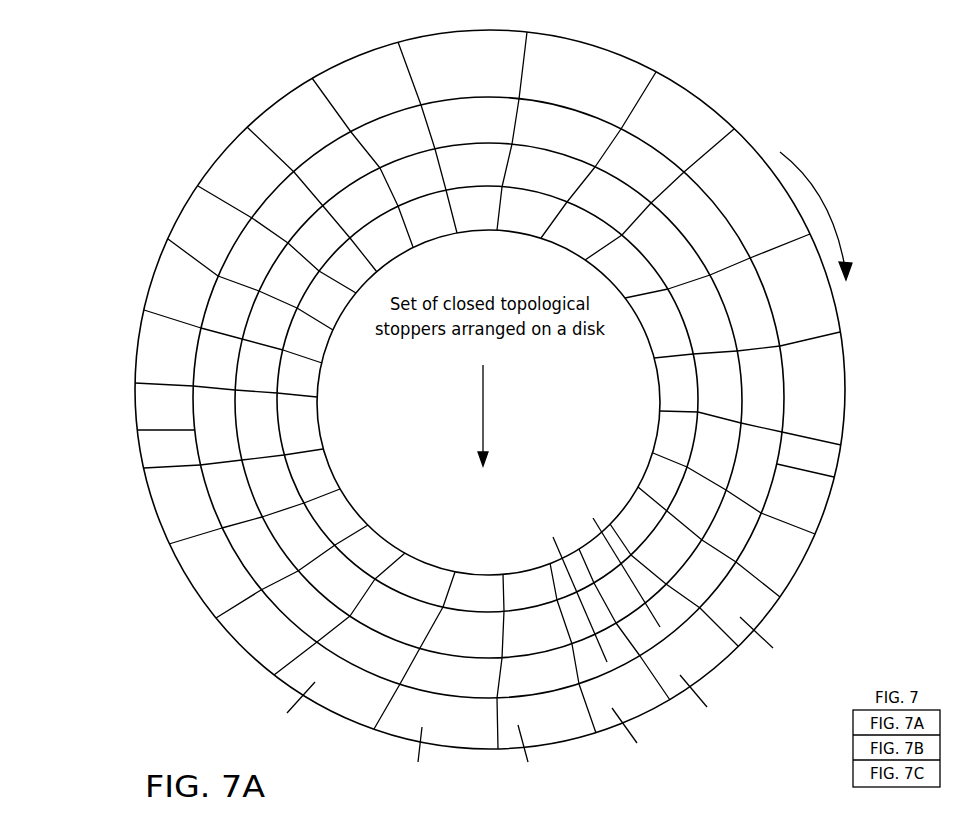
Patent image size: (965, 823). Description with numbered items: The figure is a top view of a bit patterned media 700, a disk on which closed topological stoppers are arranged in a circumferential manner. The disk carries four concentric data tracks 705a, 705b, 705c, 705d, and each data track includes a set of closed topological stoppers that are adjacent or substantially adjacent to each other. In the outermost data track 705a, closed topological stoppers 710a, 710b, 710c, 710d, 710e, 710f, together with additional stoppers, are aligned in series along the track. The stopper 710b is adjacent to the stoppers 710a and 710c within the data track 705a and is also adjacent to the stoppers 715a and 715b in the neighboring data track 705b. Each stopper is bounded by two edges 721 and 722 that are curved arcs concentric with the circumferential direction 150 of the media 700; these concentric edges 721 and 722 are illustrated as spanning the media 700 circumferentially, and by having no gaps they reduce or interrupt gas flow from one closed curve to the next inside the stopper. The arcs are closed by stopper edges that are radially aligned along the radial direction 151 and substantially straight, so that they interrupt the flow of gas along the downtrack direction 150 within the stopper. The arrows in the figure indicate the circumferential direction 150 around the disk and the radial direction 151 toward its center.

The bit patterned media (BPM) 700 is at (770, 58).
The circumferential direction 150 is at (838, 243).
The radial direction 151 is at (483, 402).
The data track 705a is at (797, 298).
The data track 705b is at (773, 363).
The data track 705c is at (717, 390).
The data track 705d is at (668, 390).
The closed topological stopper 710a is at (773, 642).
The closed topological stopper 710b is at (707, 701).
The closed topological stopper 710c is at (635, 735).
The closed topological stopper 710d is at (521, 756).
The closed topological stopper 710e is at (405, 757).
The closed topological stopper 710f is at (289, 711).
The closed topological stopper 715a is at (613, 563).
The closed topological stopper 715b is at (570, 590).
The edge 721 is at (137, 430).
The edge 722 is at (152, 498).